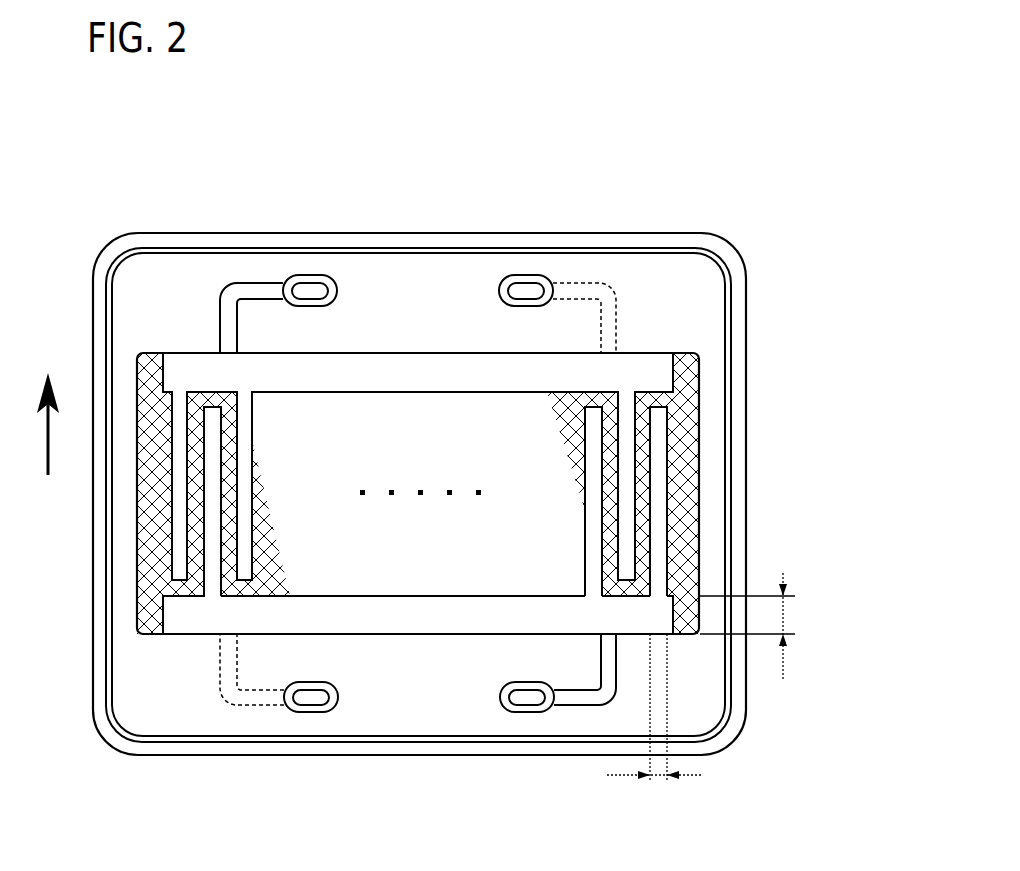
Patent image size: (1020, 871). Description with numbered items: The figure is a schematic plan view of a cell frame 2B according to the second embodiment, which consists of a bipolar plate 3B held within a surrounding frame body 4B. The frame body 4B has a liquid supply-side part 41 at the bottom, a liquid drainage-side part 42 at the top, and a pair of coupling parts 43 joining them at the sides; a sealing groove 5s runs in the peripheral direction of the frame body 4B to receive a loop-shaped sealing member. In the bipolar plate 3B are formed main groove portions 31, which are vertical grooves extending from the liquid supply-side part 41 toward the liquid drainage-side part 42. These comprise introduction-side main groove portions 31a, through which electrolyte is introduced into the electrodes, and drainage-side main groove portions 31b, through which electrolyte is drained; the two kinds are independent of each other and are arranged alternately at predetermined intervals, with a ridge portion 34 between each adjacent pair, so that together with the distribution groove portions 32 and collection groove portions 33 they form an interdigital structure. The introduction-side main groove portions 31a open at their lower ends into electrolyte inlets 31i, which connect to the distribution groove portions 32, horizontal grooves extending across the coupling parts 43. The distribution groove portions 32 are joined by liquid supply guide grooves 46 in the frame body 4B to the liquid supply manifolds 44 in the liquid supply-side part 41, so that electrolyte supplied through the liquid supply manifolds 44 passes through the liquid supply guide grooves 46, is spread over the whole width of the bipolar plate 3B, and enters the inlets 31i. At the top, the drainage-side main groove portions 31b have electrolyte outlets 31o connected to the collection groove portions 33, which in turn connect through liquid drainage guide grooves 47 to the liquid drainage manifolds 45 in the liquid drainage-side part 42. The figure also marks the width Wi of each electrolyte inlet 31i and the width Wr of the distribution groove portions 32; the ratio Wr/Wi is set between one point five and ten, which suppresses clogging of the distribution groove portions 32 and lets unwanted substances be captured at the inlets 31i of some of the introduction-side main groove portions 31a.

The cell frame 2B is at (412, 485).
The bipolar plate 3B is at (372, 412).
The frame body 4B is at (126, 229).
The sealing groove 5s is at (108, 560).
The main groove portions 31 is at (494, 493).
The introduction-side main groove portions 31a is at (593, 521).
The drainage-side main groove portions 31b is at (622, 430).
The electrolyte outlets 31o is at (625, 393).
The electrolyte inlets 31i is at (595, 593).
The distribution groove portions 32 is at (410, 620).
The collection groove portions 33 is at (452, 365).
The ridge portion 34 is at (637, 467).
The liquid supply-side part 41 is at (418, 741).
The liquid drainage-side part 42 is at (388, 251).
The coupling parts 43 is at (734, 397).
The liquid supply manifolds 44 is at (312, 700).
The liquid drainage manifolds 45 is at (308, 289).
The liquid supply guide grooves 46 is at (250, 697).
The liquid drainage guide grooves 47 is at (263, 292).
The width of electrolyte inlet Wi is at (655, 729).
The width of distribution groove portion Wr is at (760, 626).